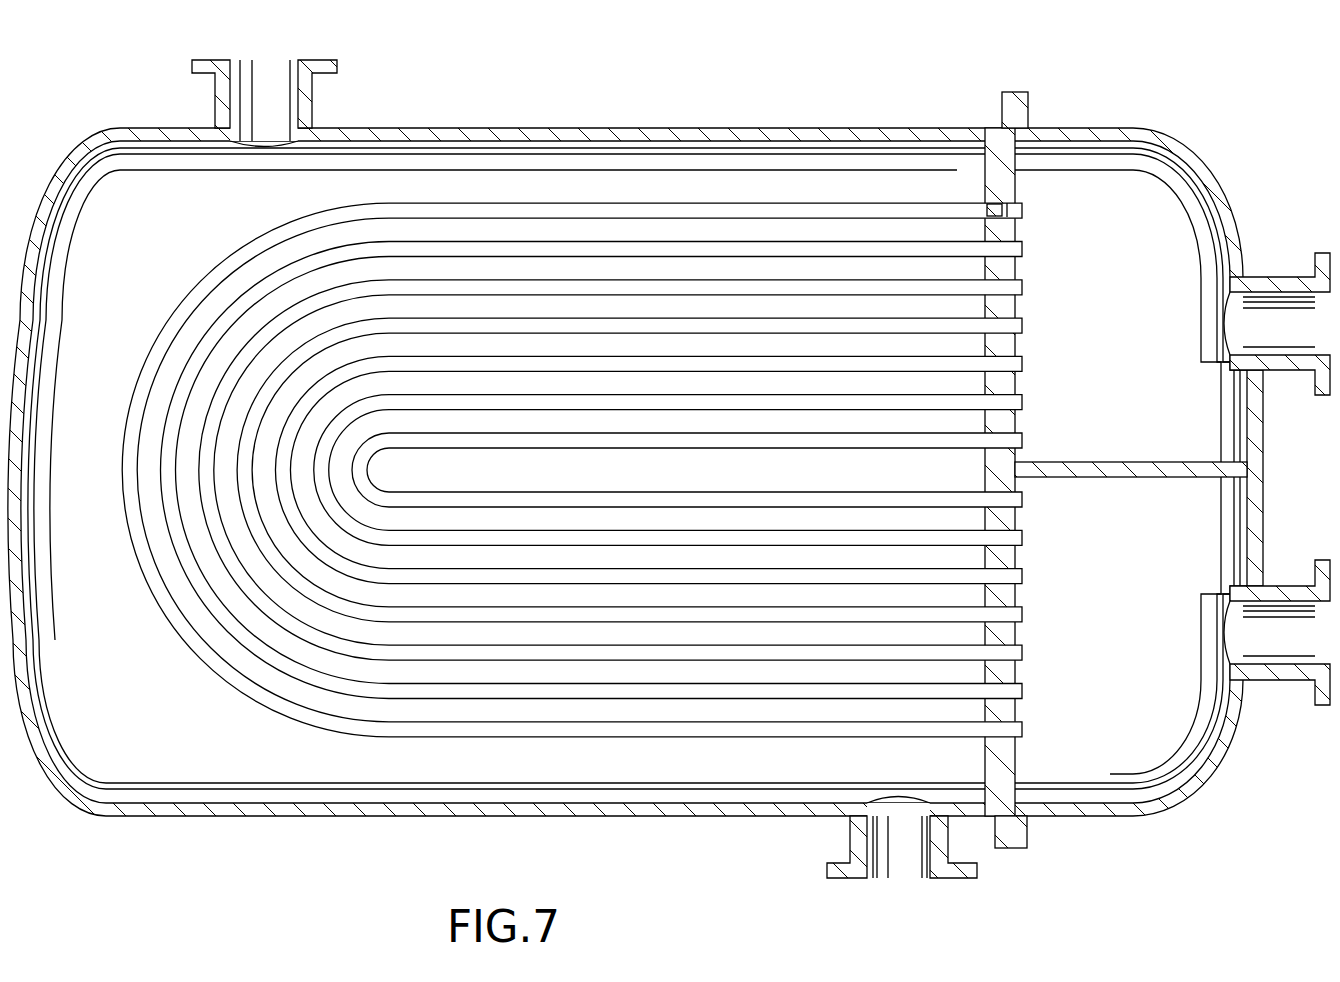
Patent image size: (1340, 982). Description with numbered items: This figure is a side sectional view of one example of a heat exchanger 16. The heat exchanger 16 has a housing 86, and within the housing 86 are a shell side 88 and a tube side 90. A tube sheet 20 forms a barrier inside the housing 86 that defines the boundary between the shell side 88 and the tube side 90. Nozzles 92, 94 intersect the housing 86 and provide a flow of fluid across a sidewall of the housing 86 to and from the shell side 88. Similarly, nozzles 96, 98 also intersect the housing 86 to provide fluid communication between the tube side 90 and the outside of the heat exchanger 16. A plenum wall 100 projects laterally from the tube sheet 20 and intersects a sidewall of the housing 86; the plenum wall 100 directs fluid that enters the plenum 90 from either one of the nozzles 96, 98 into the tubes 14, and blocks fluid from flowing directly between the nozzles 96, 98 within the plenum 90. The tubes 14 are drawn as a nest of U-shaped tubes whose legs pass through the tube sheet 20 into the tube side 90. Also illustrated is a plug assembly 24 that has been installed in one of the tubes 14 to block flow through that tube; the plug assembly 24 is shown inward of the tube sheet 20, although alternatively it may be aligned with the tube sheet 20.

The heat exchanger 16 is at (669, 452).
The tube sheet 20 is at (1010, 175).
The plug assembly 24 is at (981, 200).
The housing 86 is at (850, 127).
The shell side 88 is at (152, 207).
The tube side 90 is at (1102, 318).
The nozzle 92 is at (313, 102).
The nozzle 94 is at (848, 831).
The nozzle 96 is at (1285, 277).
The nozzle 98 is at (1282, 680).
The plenum wall 100 is at (1130, 480).
The tubes 14 is at (355, 745).